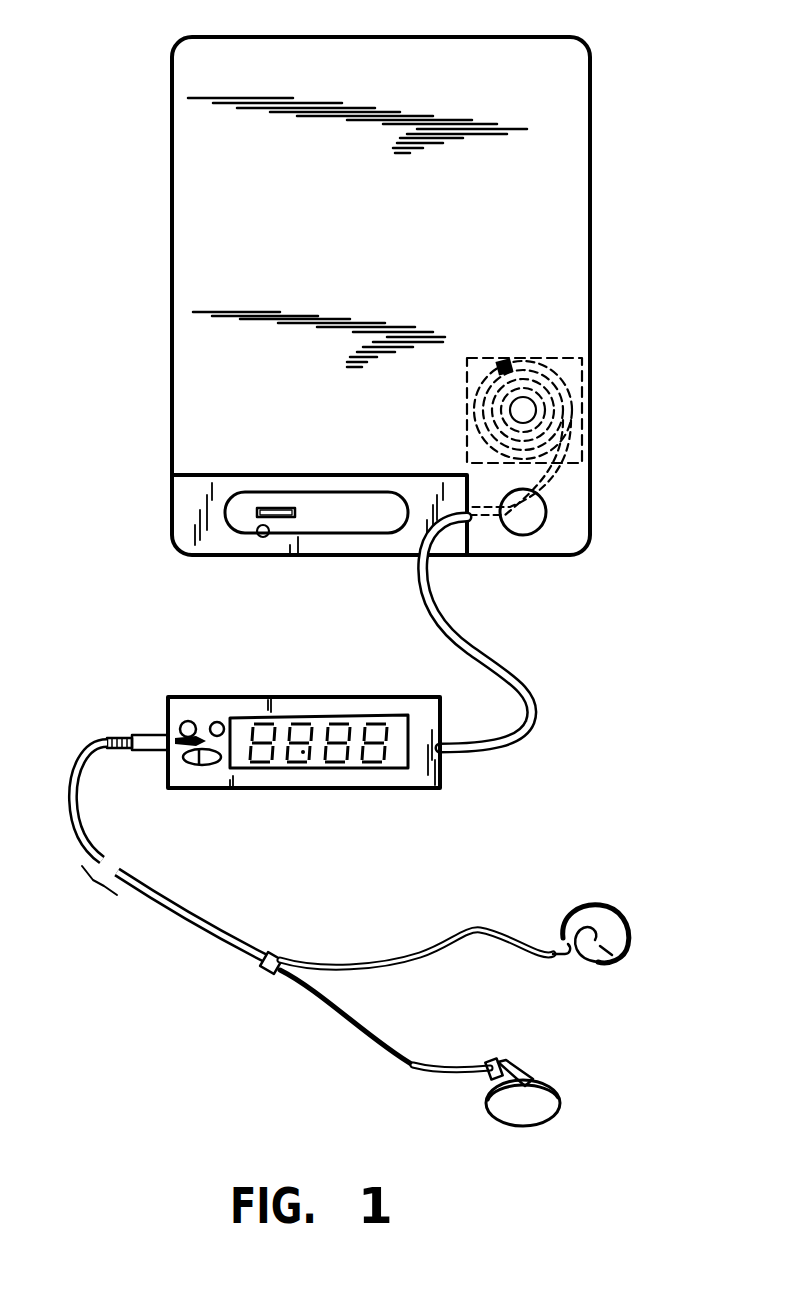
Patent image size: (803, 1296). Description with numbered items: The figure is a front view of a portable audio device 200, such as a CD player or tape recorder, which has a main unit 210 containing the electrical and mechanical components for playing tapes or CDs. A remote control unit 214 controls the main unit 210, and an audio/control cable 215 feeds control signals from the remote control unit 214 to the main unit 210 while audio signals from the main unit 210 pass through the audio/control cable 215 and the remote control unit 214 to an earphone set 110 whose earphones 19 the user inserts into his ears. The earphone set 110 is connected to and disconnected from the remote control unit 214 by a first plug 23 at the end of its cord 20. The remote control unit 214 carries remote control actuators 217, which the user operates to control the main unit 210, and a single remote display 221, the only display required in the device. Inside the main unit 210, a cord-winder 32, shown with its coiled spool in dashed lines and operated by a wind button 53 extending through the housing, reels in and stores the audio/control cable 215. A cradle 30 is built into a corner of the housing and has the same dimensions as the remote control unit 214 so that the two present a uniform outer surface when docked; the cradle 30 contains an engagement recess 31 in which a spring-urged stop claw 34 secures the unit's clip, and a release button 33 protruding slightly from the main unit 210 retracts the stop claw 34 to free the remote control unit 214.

The portable audio device 200 is at (365, 296).
The main unit 210 is at (577, 143).
The wind button 53 is at (499, 360).
The cord-winder 32 is at (560, 402).
The stop claw 34 is at (276, 507).
The cradle 30 is at (185, 505).
The engagement recess 31 is at (250, 532).
The release button 33 is at (545, 522).
The audio/control cable 215 is at (457, 632).
The remote control unit 214 is at (301, 777).
The remote display 221 is at (275, 768).
The remote control actuators 217 is at (195, 765).
The first plug 23 is at (152, 740).
The cord 20 is at (130, 890).
The earphone set 110 is at (357, 896).
The earphones 19 is at (548, 1107).